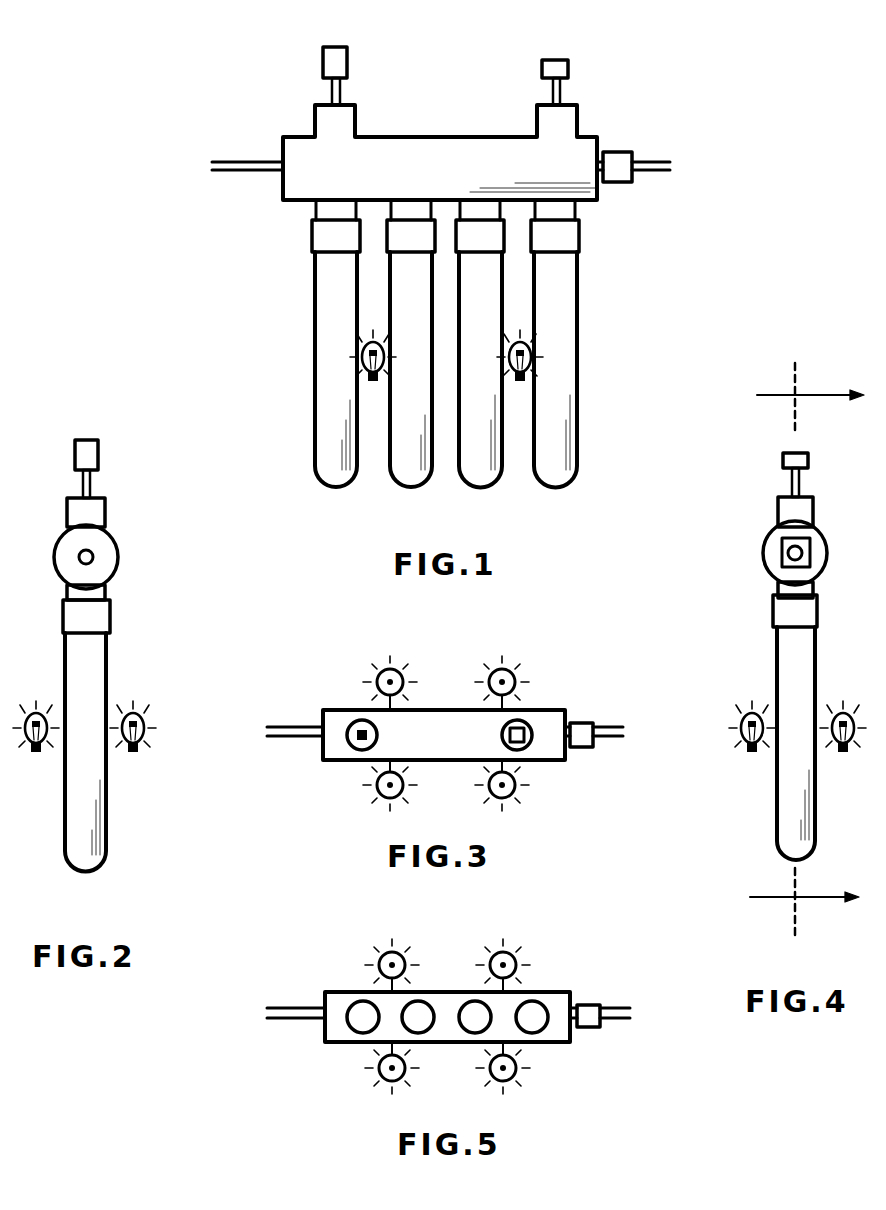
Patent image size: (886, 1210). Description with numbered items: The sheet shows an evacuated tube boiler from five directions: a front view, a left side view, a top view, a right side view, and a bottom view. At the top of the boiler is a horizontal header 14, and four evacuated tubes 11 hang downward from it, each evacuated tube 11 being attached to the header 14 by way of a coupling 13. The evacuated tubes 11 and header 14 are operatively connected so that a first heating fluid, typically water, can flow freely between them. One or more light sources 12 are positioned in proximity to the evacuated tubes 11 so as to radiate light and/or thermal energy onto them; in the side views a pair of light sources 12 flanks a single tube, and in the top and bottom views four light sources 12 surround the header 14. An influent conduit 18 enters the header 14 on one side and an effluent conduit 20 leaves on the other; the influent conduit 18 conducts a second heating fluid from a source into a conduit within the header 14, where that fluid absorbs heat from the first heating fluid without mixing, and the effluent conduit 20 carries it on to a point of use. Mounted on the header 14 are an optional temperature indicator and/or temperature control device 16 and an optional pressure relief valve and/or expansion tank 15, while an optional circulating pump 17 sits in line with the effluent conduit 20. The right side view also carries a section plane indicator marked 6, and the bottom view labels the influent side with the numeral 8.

In FIG. 4, the section line 6 is at (807, 649).
In FIG. 5, the inlet line 8 is at (283, 1022).
In FIG. 1, the evacuated tube 11 is at (325, 452).
In FIG. 2, the evacuated tube 11 is at (75, 836).
In FIG. 5, the evacuated tube 11 is at (545, 1030).
In FIG. 4, the evacuated tube 11 is at (787, 832).
In FIG. 1, the light source 12 is at (360, 350).
In FIG. 2, the light source 12 is at (148, 712).
In FIG. 3, the light source 12 is at (498, 660).
In FIG. 5, the light source 12 is at (498, 943).
In FIG. 4, the light source 12 is at (742, 706).
In FIG. 1, the coupling 13 is at (320, 238).
In FIG. 2, the coupling 13 is at (110, 604).
In FIG. 4, the coupling 13 is at (813, 608).
In FIG. 1, the header 14 is at (428, 135).
In FIG. 2, the header 14 is at (117, 545).
In FIG. 3, the header 14 is at (548, 716).
In FIG. 5, the header 14 is at (336, 1044).
In FIG. 4, the header 14 is at (765, 535).
In FIG. 1, the pressure relief valve and/or expansion tank 15 is at (568, 68).
In FIG. 3, the pressure relief valve and/or expansion tank 15 is at (528, 746).
In FIG. 4, the pressure relief valve and/or expansion tank 15 is at (808, 456).
In FIG. 1, the temperature indicator and/or temperature control device 16 is at (327, 47).
In FIG. 2, the temperature indicator and/or temperature control device 16 is at (98, 440).
In FIG. 3, the temperature indicator and/or temperature control device 16 is at (352, 746).
In FIG. 1, the circulating pump 17 is at (630, 150).
In FIG. 3, the circulating pump 17 is at (582, 722).
In FIG. 5, the circulating pump 17 is at (590, 1003).
In FIG. 4, the circulating pump 17 is at (803, 545).
In FIG. 1, the influent conduit 18 is at (230, 176).
In FIG. 2, the influent conduit 18 is at (79, 558).
In FIG. 3, the influent conduit 18 is at (283, 740).
In FIG. 1, the effluent conduit 20 is at (665, 178).
In FIG. 3, the effluent conduit 20 is at (606, 749).
In FIG. 5, the effluent conduit 20 is at (612, 1028).